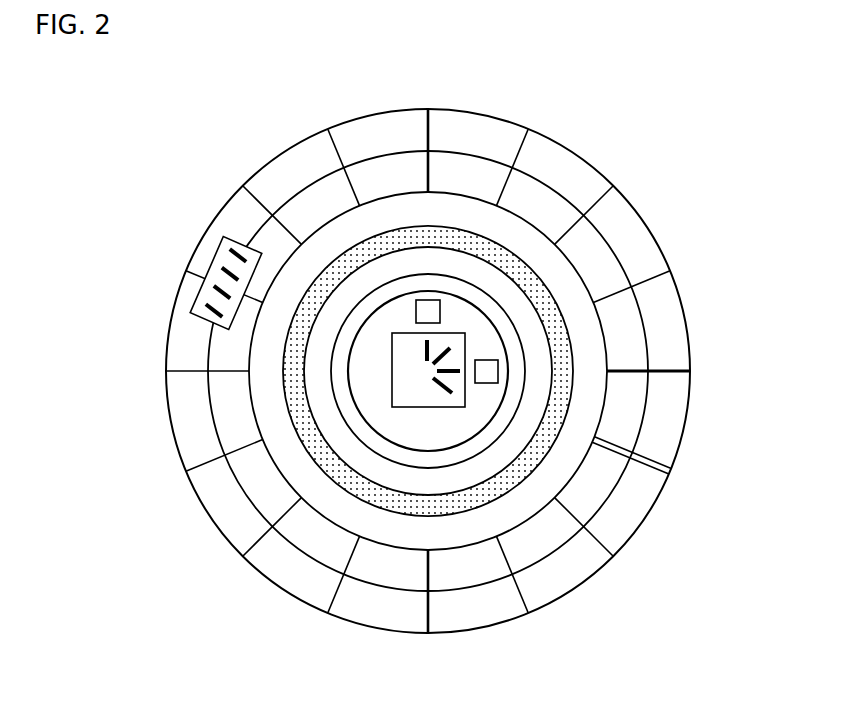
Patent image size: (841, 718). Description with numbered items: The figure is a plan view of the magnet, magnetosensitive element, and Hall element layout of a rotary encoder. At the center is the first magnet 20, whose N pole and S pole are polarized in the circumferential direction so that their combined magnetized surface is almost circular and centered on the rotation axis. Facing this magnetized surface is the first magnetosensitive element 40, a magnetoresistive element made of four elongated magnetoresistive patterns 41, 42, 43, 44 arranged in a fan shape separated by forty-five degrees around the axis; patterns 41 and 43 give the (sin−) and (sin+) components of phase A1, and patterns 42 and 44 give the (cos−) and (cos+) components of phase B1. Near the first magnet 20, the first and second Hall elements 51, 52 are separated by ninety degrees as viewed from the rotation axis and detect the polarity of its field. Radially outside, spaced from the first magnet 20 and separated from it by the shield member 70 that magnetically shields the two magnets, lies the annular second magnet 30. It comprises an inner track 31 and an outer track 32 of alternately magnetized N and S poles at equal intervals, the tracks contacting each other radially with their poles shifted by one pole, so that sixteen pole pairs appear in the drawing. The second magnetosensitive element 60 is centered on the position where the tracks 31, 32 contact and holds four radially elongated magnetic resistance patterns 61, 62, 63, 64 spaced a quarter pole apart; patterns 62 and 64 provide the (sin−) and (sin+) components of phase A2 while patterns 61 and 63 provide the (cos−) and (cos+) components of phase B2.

The first magnet 20 is at (349, 383).
The second magnet 30 is at (585, 158).
The inner track 31 is at (620, 367).
The outer track 32 is at (654, 456).
The first magnetosensitive element 40 is at (401, 333).
The magnetoresistive pattern 41 is at (427, 347).
The magnetoresistive pattern 42 is at (449, 346).
The magnetoresistive pattern 43 is at (459, 372).
The magnetoresistive pattern 44 is at (446, 393).
The first Hall element 51 is at (428, 302).
The second Hall element 52 is at (498, 372).
The second magnetosensitive element 60 is at (220, 248).
The magnetic resistance pattern 61 is at (236, 244).
The magnetic resistance pattern 62 is at (222, 267).
The magnetic resistance pattern 63 is at (213, 288).
The magnetic resistance pattern 64 is at (207, 310).
The shield member 70 is at (555, 300).